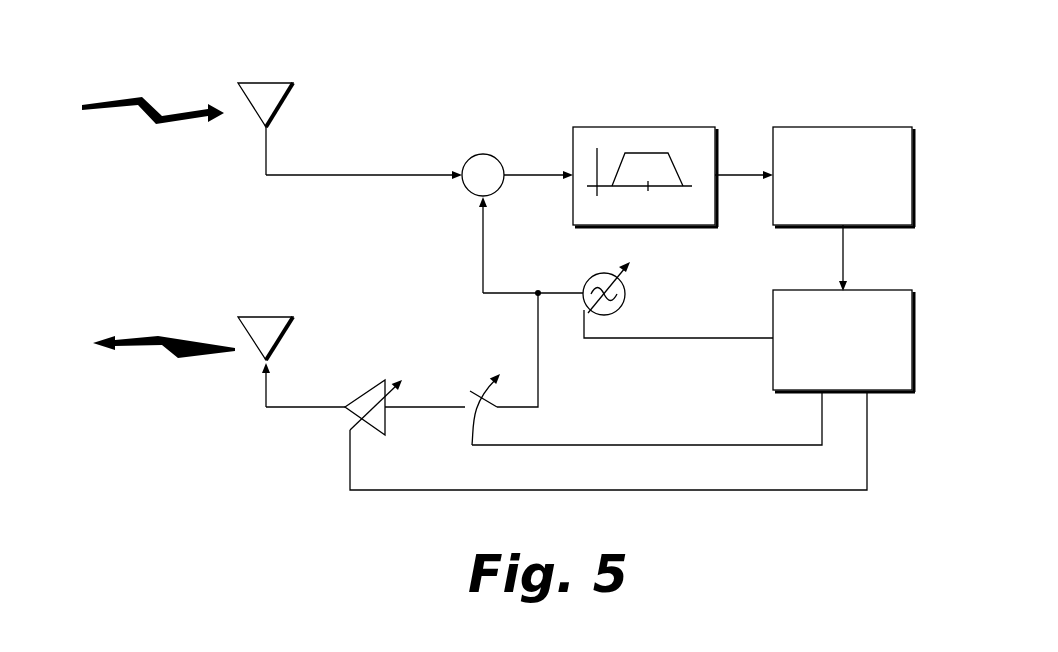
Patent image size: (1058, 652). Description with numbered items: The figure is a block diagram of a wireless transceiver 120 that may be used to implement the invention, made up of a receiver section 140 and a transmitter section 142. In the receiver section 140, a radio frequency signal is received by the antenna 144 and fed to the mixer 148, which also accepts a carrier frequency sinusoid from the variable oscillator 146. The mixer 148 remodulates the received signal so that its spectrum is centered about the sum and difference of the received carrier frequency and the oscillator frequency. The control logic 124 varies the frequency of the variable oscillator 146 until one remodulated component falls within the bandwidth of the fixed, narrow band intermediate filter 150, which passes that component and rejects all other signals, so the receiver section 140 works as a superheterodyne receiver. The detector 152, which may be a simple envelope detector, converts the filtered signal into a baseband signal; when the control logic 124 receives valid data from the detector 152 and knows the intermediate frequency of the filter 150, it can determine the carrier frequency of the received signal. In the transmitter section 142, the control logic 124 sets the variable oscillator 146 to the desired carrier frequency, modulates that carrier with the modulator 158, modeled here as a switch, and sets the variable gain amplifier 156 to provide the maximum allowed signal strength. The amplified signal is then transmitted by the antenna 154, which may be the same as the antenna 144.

The wireless transceiver 120 is at (865, 82).
The control logic 124 is at (880, 393).
The receiver section 140 is at (178, 167).
The transmitter section 142 is at (180, 439).
The antenna 144 is at (283, 106).
The variable oscillator 146 is at (592, 275).
The mixer 148 is at (476, 153).
The intermediate filter 150 is at (650, 127).
The detector 152 is at (880, 228).
The antenna 154 is at (283, 340).
The variable gain amplifier 156 is at (362, 390).
The modulator 158 is at (477, 393).